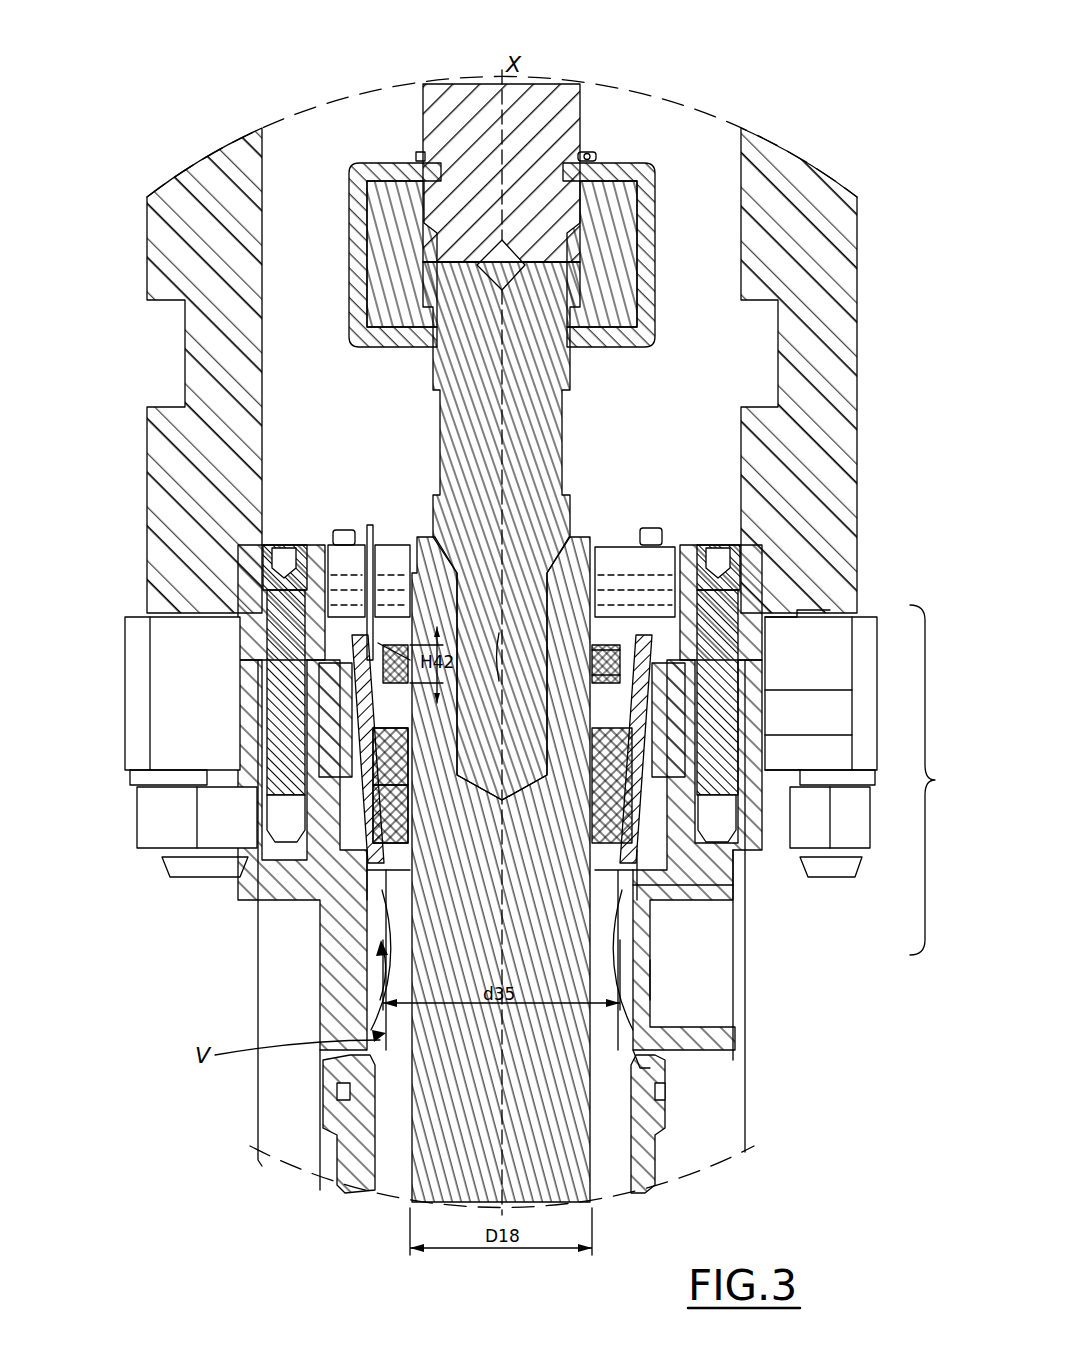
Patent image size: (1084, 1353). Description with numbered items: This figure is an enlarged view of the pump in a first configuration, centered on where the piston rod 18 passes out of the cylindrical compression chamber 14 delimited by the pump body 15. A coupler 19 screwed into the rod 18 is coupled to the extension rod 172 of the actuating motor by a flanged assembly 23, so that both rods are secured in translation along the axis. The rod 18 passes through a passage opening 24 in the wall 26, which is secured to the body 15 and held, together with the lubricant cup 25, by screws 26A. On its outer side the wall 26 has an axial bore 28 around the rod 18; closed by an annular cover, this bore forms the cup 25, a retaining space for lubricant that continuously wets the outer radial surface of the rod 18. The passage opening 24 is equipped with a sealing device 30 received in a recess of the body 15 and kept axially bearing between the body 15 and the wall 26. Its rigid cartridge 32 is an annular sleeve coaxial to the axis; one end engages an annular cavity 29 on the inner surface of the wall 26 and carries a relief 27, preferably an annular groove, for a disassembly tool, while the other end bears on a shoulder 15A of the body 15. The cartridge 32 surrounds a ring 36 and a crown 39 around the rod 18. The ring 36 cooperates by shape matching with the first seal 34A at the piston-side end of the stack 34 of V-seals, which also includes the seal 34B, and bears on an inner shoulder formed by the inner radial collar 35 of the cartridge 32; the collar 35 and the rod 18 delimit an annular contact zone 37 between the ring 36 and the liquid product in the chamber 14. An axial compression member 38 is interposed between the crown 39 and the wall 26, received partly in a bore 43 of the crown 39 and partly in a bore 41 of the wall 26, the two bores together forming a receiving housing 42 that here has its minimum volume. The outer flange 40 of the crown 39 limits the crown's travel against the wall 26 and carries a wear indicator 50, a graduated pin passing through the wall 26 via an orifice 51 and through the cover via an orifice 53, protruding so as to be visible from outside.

The extension rod 172 is at (531, 130).
The flanged assembly 23 is at (593, 213).
The coupler 19 is at (540, 418).
The piston rod 18 is at (577, 556).
The passage opening 24 is at (598, 600).
The annular cup 25 is at (390, 578).
The wall 26 is at (745, 612).
The screws 26A is at (718, 603).
The relief 27 is at (700, 605).
The axial bore 28 is at (342, 545).
The annular cavity 29 is at (240, 618).
The wear indicator 50 is at (350, 585).
The orifice 51 is at (376, 646).
The orifice 53 is at (381, 528).
The receiving housing 42 is at (410, 662).
The bore 41 is at (593, 655).
The bore 43 is at (593, 666).
The stack of V-seals 34 is at (640, 800).
The first seal 34A is at (355, 858).
The seal ring 34B is at (395, 730).
The axial compression member 38 is at (778, 668).
The outer flange 40 is at (767, 688).
The cartridge 32 is at (765, 733).
The crown 39 is at (765, 757).
The ring 36 is at (700, 900).
The inner radial collar 35 is at (700, 960).
The sealing device 30 is at (937, 780).
The annular contact zone 37 is at (598, 862).
The shoulder 15A is at (363, 907).
The compression chamber 14 is at (385, 1030).
The pump body 15 is at (720, 1110).